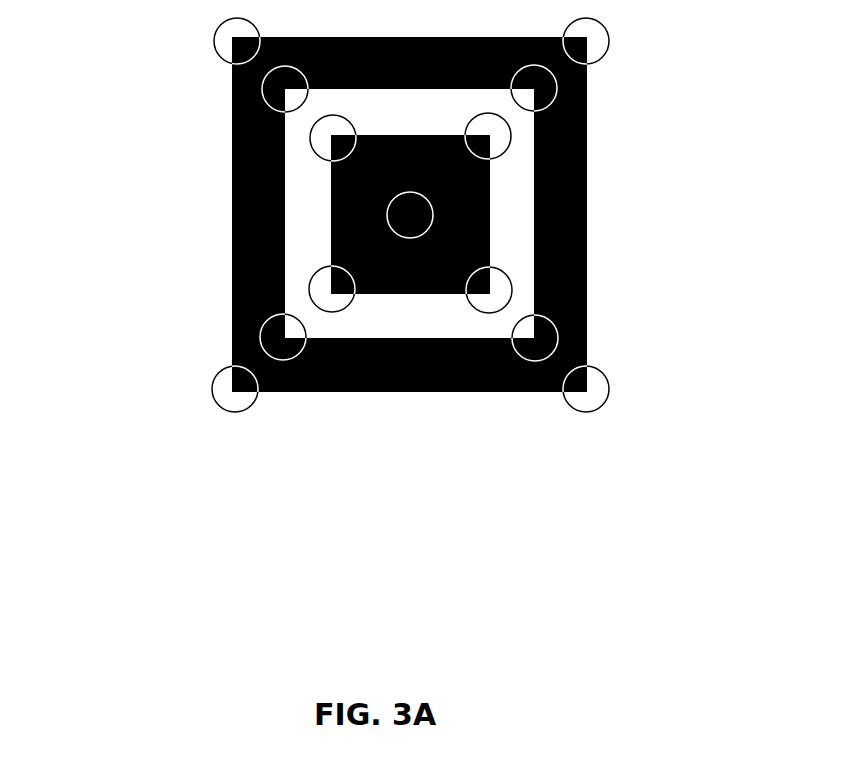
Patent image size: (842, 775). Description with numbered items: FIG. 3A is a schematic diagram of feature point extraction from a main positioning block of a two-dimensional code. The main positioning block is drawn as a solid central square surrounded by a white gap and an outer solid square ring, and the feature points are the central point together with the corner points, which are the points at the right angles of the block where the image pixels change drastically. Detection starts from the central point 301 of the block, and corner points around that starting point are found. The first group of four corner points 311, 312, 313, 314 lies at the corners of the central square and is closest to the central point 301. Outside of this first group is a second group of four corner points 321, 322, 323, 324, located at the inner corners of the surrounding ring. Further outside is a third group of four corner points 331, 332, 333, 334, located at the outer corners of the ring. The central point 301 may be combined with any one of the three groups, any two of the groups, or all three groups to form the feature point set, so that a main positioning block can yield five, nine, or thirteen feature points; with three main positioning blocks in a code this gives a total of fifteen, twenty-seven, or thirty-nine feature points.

The central point 301 is at (433, 214).
The corner point 311 is at (310, 139).
The corner point 312 is at (511, 139).
The corner point 313 is at (309, 288).
The corner point 314 is at (512, 289).
The corner point 321 is at (262, 91).
The corner point 322 is at (557, 91).
The corner point 323 is at (260, 337).
The corner point 324 is at (558, 337).
The corner point 331 is at (214, 42).
The corner point 332 is at (609, 42).
The corner point 333 is at (212, 388).
The corner point 334 is at (609, 388).